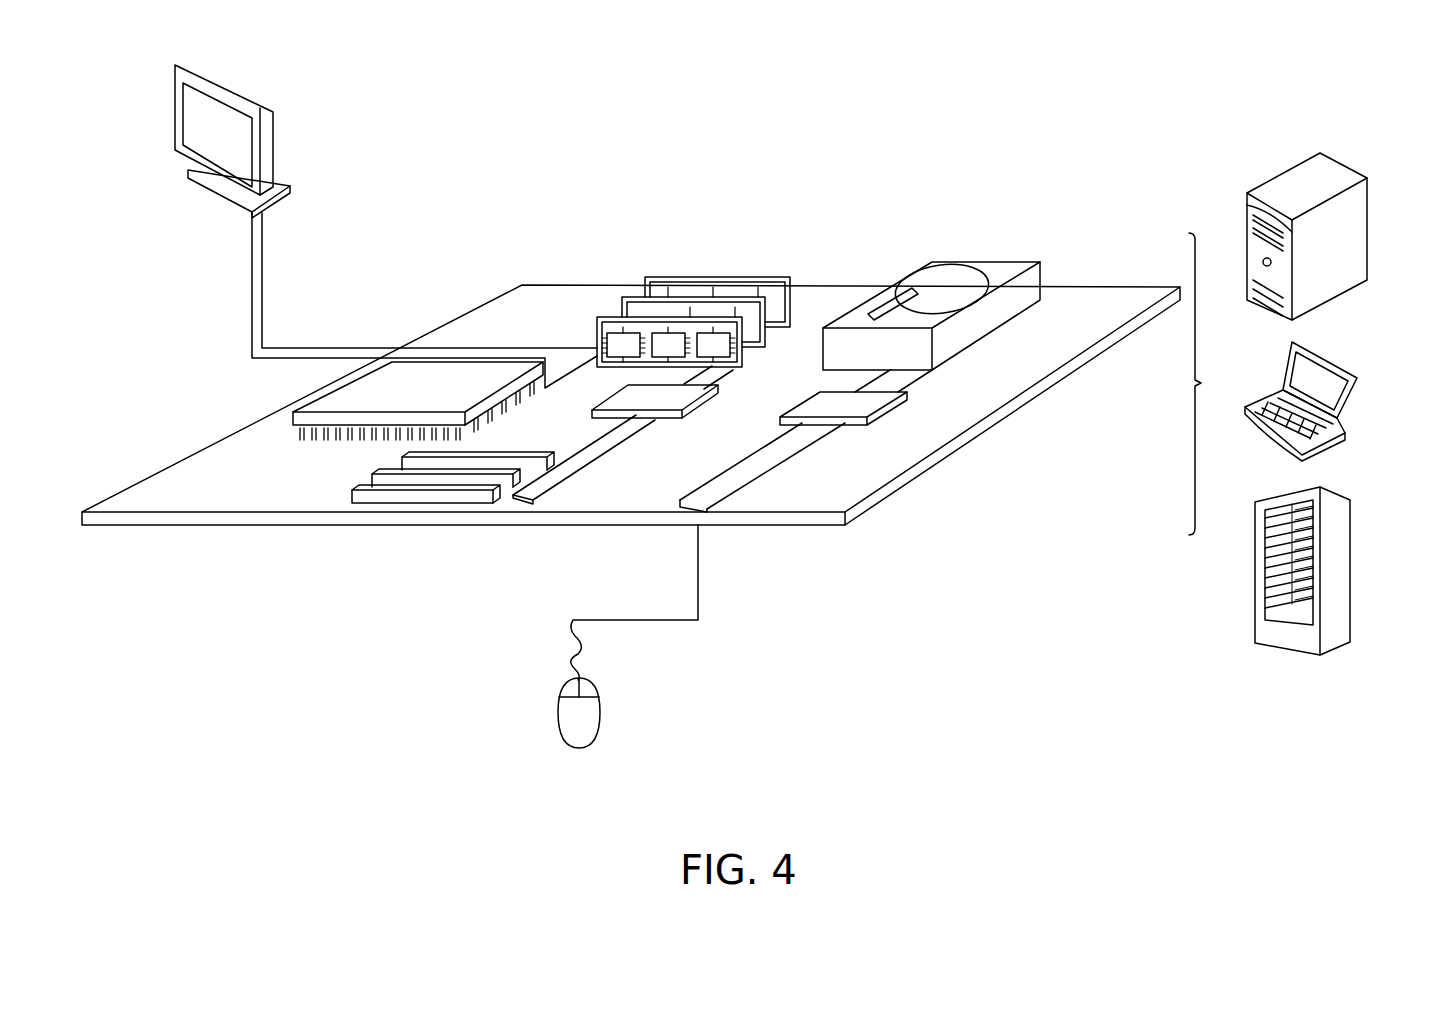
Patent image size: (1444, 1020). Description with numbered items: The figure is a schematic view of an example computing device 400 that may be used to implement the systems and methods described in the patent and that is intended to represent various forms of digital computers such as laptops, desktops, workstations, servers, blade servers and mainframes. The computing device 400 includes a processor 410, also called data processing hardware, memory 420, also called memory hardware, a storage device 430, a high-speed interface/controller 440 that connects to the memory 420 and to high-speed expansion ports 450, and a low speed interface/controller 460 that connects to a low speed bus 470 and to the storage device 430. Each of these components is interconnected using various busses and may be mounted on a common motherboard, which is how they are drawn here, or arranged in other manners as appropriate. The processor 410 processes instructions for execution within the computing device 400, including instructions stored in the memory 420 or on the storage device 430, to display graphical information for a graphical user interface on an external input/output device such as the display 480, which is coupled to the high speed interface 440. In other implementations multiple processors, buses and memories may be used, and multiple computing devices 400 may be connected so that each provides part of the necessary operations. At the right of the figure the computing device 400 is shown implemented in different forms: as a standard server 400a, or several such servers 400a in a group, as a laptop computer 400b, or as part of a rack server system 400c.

The computing device 400 is at (981, 98).
The standard server 400a is at (1276, 176).
The laptop computer 400b is at (1370, 362).
The rack server system 400c is at (1345, 548).
The processor 410 is at (293, 414).
The memory 420 is at (712, 277).
The storage device 430 is at (981, 262).
The high-speed interface/controller 440 is at (660, 418).
The high-speed expansion ports 450 is at (352, 488).
The low speed interface/controller 460 is at (832, 402).
The low speed bus 470 is at (713, 512).
The display 480 is at (175, 117).